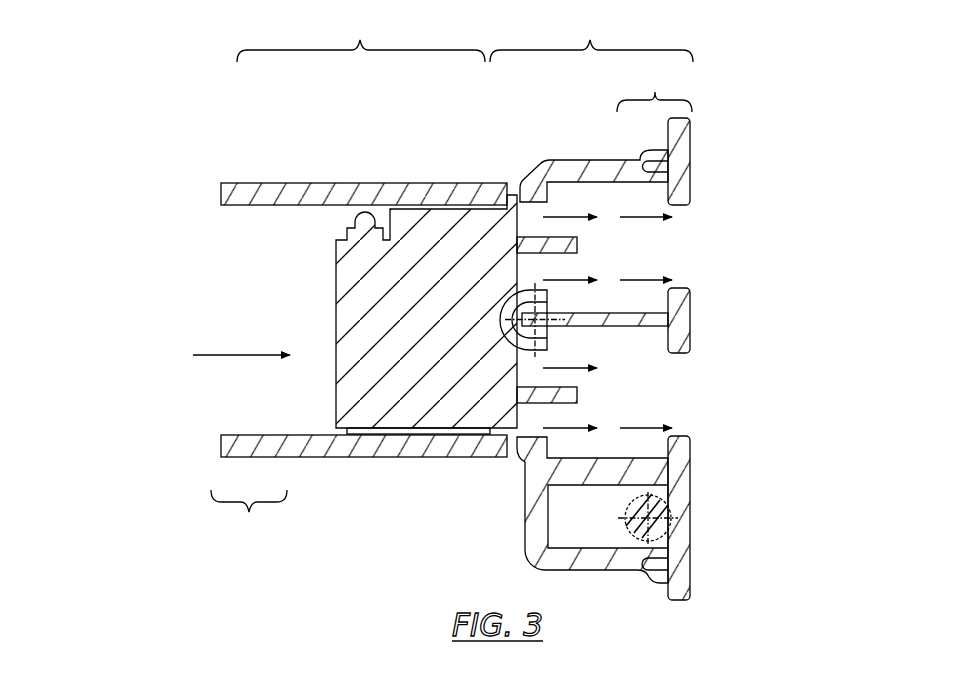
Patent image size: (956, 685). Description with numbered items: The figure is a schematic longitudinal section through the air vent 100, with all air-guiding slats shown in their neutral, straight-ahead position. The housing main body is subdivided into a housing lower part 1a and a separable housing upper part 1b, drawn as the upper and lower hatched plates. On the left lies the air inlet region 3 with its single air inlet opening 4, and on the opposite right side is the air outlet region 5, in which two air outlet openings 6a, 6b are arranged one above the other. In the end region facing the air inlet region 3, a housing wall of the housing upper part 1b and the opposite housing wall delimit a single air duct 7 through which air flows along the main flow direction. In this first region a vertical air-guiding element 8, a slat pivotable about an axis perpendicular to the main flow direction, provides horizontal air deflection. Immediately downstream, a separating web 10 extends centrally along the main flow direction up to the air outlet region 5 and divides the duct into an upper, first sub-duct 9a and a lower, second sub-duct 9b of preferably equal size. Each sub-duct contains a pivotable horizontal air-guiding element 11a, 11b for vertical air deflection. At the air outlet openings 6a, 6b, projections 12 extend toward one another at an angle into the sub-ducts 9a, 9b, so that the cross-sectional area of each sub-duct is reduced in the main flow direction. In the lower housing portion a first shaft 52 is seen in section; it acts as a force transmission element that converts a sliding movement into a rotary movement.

The air vent 100 is at (163, 77).
The housing lower part 1a is at (295, 447).
The housing upper part 1b is at (290, 195).
The air inlet region 3 is at (249, 522).
The air inlet opening 4 is at (213, 237).
The air outlet region 5 is at (606, 131).
The air duct 7 is at (281, 277).
The vertical air-guiding element 8 is at (392, 352).
The first sub-duct 9a is at (635, 259).
The second sub-duct 9b is at (635, 409).
The separating web 10 is at (607, 318).
The air-guiding element 11a is at (553, 243).
The air-guiding element 11b is at (545, 395).
The projection 12 is at (675, 203).
The air outlet opening 6a is at (680, 243).
The air outlet opening 6b is at (680, 392).
The first shaft 52 is at (648, 518).